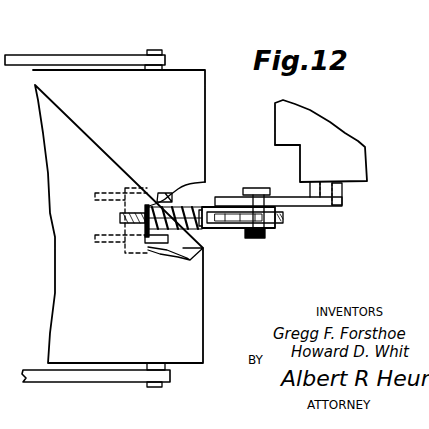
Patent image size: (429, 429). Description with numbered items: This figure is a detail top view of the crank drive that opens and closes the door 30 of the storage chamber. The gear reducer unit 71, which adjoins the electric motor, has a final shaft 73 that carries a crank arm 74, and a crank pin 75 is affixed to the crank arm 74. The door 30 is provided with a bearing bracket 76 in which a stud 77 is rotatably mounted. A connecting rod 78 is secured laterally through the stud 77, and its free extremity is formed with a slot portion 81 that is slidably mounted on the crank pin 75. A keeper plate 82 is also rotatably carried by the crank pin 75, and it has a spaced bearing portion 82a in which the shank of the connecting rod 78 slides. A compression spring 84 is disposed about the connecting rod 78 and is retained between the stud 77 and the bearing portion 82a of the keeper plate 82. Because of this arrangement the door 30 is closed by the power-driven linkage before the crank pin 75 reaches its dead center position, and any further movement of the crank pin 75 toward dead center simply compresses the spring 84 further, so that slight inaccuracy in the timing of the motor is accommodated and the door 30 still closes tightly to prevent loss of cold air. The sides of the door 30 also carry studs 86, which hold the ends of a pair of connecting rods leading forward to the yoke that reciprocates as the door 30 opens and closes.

The door 30 is at (119, 216).
The gear reducer unit 71 is at (321, 141).
The final shaft 73 is at (343, 200).
The crank arm 74 is at (300, 206).
The crank pin 75 is at (262, 183).
The bearing bracket 76 is at (195, 260).
The stud 77 is at (125, 250).
The connecting rod 78 is at (120, 218).
The slot portion 81 is at (279, 223).
The keeper plate 82 is at (247, 238).
The bearing portion 82a is at (205, 207).
The compression spring 84 is at (205, 230).
The studs 86 is at (152, 50).